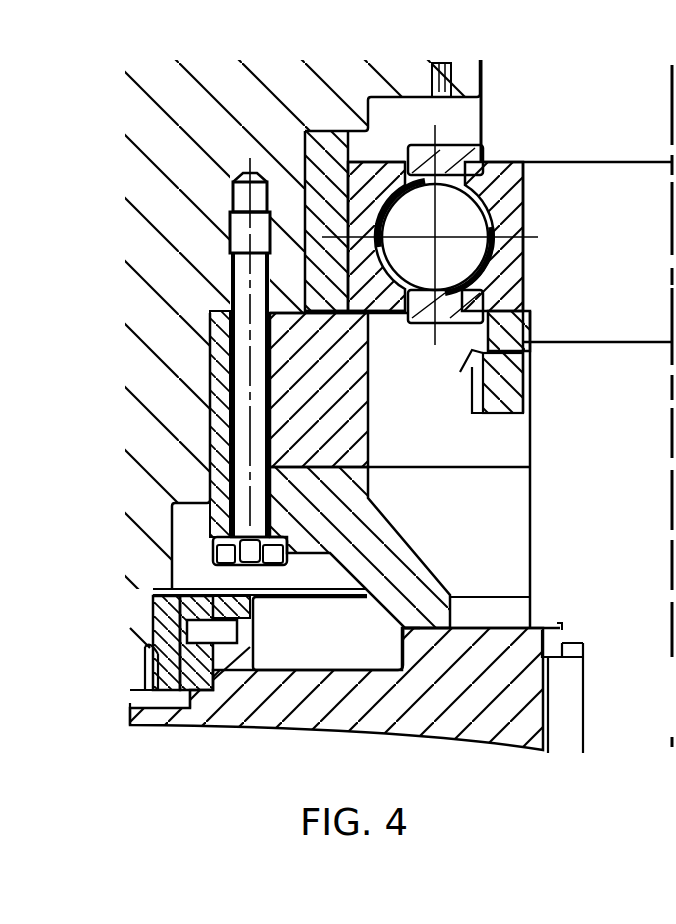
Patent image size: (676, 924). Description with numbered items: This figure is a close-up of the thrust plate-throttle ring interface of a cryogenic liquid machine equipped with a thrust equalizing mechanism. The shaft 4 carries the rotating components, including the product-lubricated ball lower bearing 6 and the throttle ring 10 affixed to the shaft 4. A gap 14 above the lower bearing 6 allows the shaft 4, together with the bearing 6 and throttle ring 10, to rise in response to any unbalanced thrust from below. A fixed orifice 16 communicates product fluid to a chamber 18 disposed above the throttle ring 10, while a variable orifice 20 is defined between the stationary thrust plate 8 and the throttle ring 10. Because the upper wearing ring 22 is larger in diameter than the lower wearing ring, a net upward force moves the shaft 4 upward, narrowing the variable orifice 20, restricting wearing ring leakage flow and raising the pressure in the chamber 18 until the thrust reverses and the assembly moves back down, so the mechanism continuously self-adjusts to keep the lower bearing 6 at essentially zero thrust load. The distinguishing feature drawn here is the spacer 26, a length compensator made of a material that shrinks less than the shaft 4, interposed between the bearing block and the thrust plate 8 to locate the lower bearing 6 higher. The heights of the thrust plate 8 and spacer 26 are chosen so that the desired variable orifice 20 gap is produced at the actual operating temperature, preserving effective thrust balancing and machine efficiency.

The shaft 4 is at (568, 128).
The lower bearing 6 is at (455, 215).
The thrust plate 8 is at (412, 552).
The throttle ring 10 is at (497, 628).
The gap 14 is at (362, 148).
The fixed orifice 16 is at (178, 682).
The chamber 18 is at (308, 639).
The variable orifice 20 is at (390, 630).
The upper wearing ring 22 is at (170, 682).
The spacer 26 is at (375, 402).